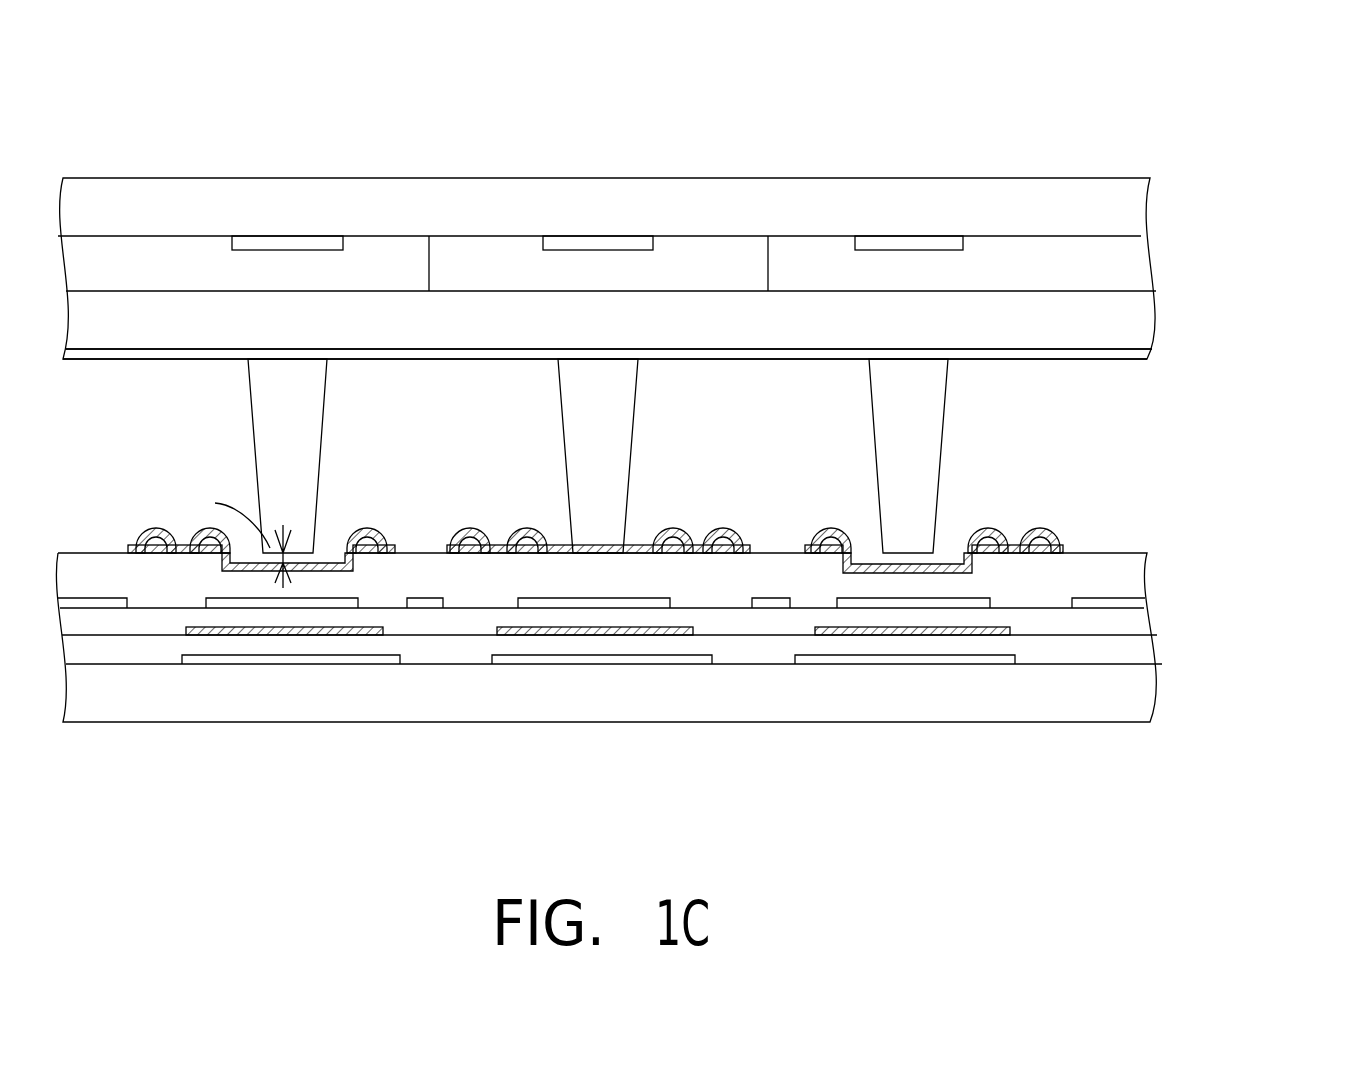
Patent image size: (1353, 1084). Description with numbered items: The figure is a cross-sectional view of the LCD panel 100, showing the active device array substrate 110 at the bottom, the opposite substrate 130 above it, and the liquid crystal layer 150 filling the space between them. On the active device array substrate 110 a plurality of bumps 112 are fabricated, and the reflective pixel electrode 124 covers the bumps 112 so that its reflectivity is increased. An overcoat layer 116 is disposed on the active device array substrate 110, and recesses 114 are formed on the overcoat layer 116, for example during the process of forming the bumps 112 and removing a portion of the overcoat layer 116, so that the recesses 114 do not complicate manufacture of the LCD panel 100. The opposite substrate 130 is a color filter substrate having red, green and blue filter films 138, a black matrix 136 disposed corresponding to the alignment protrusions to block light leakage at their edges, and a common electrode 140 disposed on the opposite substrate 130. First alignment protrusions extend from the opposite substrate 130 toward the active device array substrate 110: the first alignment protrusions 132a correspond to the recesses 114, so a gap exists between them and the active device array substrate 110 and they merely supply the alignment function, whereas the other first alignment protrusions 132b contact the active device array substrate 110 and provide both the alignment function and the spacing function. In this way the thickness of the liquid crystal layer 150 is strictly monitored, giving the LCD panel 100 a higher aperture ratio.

The LCD panel 100 is at (700, 487).
The active device array substrate 110 is at (647, 659).
The bumps 112 is at (363, 547).
The recesses 114 is at (327, 547).
The overcoat layer 116 is at (1120, 580).
The reflective pixel electrode 124 is at (487, 547).
The opposite substrate 130 is at (679, 227).
The first alignment protrusions 132a is at (250, 378).
The first alignment protrusions 132b is at (637, 380).
The black matrix 136 is at (313, 246).
The filter films 138 is at (410, 246).
The common electrode 140 is at (1147, 357).
The liquid crystal layer 150 is at (683, 456).